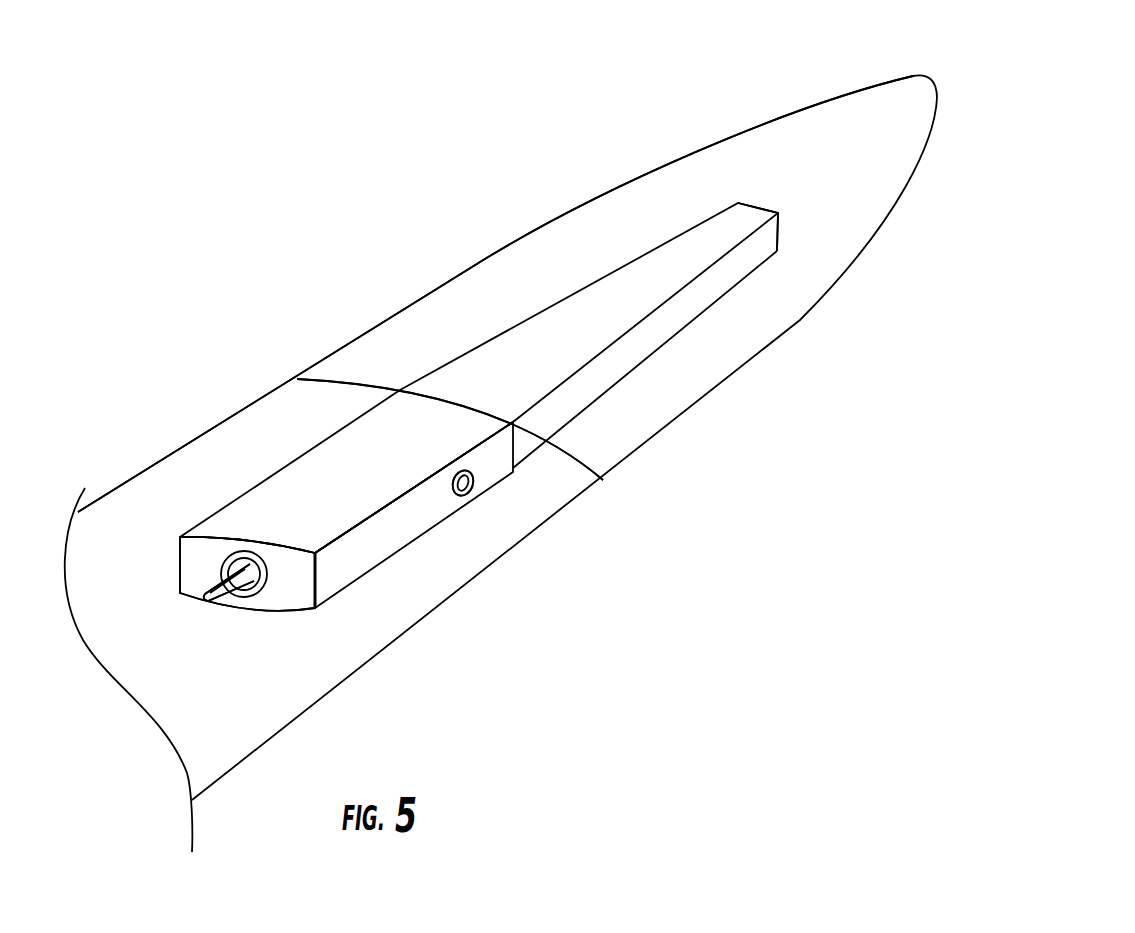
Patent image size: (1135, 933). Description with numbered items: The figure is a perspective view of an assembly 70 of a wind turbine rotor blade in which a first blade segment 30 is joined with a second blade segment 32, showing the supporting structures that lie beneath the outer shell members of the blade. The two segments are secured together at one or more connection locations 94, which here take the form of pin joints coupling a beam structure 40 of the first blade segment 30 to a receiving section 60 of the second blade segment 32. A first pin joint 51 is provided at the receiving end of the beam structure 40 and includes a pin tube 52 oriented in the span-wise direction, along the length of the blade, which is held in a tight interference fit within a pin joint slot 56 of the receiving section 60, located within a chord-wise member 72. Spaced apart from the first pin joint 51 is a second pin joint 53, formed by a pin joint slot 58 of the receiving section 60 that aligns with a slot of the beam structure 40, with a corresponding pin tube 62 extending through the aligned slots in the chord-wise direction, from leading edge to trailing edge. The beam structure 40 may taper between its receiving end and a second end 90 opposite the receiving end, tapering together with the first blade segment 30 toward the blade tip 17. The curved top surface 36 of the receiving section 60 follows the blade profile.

The blade tip 17 is at (927, 78).
The first blade segment 30 is at (698, 147).
The second blade segment 32 is at (128, 500).
The curved top surface of mounting block 36 is at (316, 447).
The beam structure 40 is at (570, 300).
The first pin joint 51 is at (233, 628).
The pin tube 52 is at (217, 603).
The second pin joint 53 is at (453, 457).
The pin joint slot 56 is at (247, 551).
The pin joint slot 58 is at (456, 494).
The receiving section 60 is at (380, 535).
The pin tube 62 is at (472, 490).
The assembly 70 is at (218, 232).
The chord-wise member 72 is at (207, 557).
The second end 90 is at (762, 203).
The connection location 94 is at (443, 485).